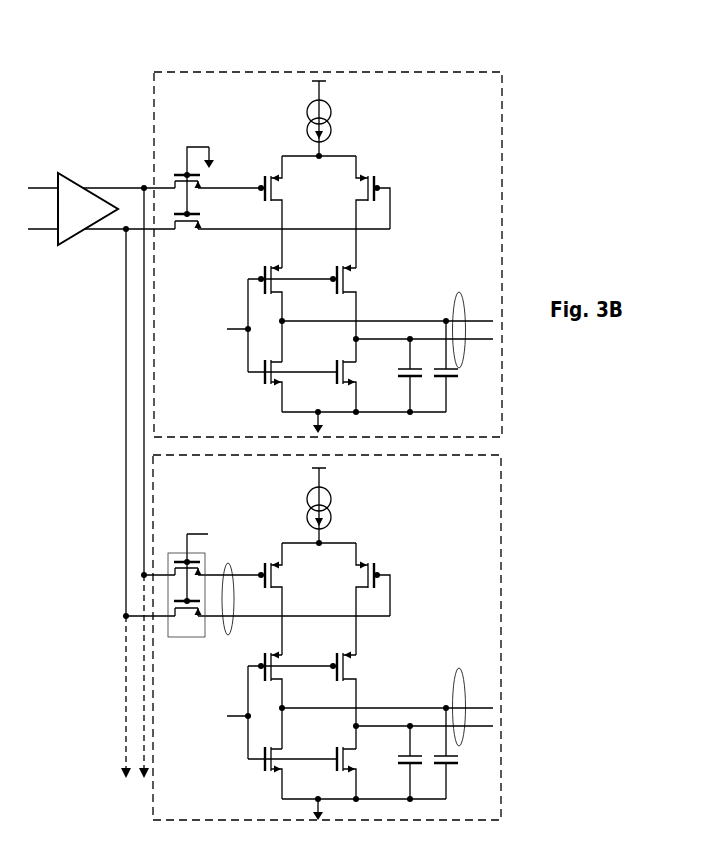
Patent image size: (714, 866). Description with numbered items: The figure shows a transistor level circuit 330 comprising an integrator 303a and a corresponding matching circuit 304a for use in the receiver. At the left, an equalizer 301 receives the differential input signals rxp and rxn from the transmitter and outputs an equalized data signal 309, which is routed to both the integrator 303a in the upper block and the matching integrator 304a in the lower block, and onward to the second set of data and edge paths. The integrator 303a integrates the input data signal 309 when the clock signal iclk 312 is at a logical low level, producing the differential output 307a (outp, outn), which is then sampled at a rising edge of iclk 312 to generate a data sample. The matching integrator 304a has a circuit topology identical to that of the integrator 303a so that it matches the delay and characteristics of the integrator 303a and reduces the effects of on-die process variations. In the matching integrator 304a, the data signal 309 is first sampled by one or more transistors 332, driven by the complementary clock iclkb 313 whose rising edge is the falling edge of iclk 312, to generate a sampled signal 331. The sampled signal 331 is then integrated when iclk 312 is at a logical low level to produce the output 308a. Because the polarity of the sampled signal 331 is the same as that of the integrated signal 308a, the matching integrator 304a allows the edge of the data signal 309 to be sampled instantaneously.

The transistor level circuit 330 is at (327, 31).
The equalizer 301 is at (68, 186).
The equalized signal 309 is at (95, 187).
The integrator 303a is at (503, 122).
The matching circuit 304a is at (502, 505).
The output of the integrator 307a is at (456, 300).
The first edge of the data signal 308a is at (389, 696).
The iclk 312 is at (223, 530).
The iclkb 313 is at (194, 549).
The sampled signal 331 is at (229, 564).
The transistors 332 is at (205, 637).